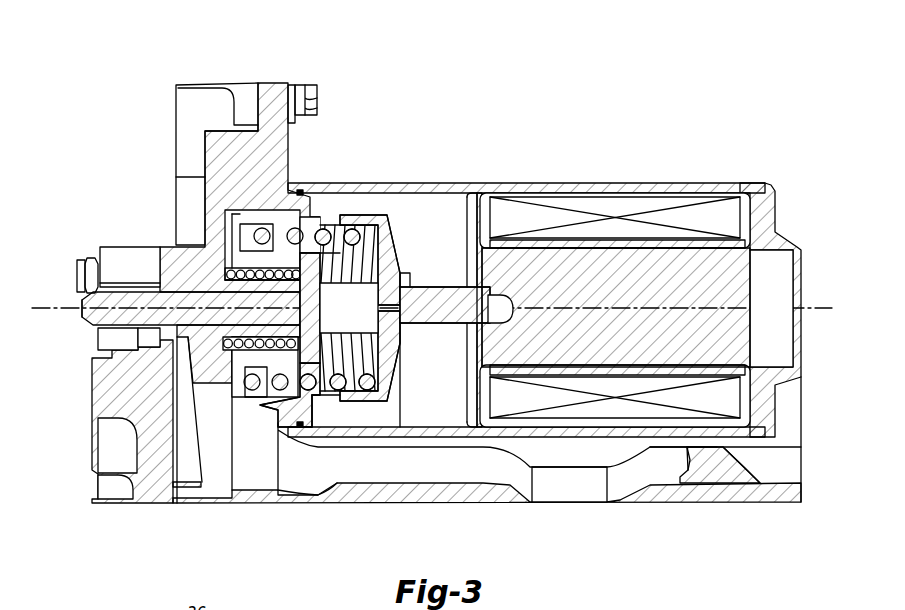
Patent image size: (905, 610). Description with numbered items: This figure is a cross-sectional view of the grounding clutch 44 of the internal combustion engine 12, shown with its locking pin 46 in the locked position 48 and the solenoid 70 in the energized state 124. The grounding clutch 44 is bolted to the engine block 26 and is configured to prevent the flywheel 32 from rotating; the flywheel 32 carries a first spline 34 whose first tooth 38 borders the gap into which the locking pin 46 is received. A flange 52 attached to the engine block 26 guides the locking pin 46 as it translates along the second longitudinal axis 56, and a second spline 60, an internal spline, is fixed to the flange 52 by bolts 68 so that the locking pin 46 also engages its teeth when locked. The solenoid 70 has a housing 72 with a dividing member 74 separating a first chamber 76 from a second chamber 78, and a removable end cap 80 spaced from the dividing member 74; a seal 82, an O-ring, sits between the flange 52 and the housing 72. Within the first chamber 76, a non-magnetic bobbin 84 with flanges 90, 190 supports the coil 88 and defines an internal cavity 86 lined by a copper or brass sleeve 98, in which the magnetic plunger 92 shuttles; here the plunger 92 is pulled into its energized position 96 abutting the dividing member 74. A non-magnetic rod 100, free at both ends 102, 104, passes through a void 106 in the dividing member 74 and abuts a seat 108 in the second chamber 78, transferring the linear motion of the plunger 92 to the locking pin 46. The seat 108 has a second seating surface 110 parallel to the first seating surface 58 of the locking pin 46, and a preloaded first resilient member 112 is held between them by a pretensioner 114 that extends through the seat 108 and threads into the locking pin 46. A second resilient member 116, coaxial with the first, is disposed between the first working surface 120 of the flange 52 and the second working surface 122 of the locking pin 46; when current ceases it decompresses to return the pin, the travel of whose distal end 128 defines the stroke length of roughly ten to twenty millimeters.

The internal combustion engine 12 is at (122, 41).
The engine block 26 is at (212, 84).
The flywheel 32 is at (152, 497).
The first spline 34 is at (100, 372).
The first tooth 38 is at (98, 338).
The grounding clutch 44 is at (156, 164).
The locking pin 46 is at (82, 318).
The locked position 48 is at (70, 228).
The flange 52 is at (278, 100).
The second longitudinal axis 56 is at (44, 306).
The first seating surface 58 is at (250, 222).
The second spline 60 is at (122, 248).
The bolts 68 is at (88, 259).
The solenoid 70 is at (634, 131).
The housing 72 is at (690, 183).
The dividing member 74 is at (478, 213).
The first chamber 76 is at (594, 210).
The second chamber 78 is at (396, 202).
The end cap 80 is at (760, 223).
The seal 82 is at (300, 190).
The bobbin 84 is at (604, 245).
The internal cavity 86 is at (775, 354).
The coil 88 is at (662, 412).
The flange (bobbin flange) 90 is at (490, 210).
The plunger 92 is at (616, 307).
The energized position 96 is at (822, 462).
The sleeve 98 is at (742, 288).
The rod 100 is at (446, 324).
The end (of rod) 102 is at (402, 326).
The end (of rod) 104 is at (515, 299).
The void 106 is at (455, 303).
The seat 108 is at (388, 232).
The second seating surface 110 is at (374, 386).
The first resilient member 112 is at (352, 228).
The pretensioner 114 is at (412, 280).
The second resilient member 116 is at (240, 355).
The first working surface 120 is at (224, 237).
The second working surface 122 is at (298, 284).
The energized state 124 is at (769, 492).
The distal end 128 is at (78, 296).
The flange (bobbin flange) 190 is at (745, 207).